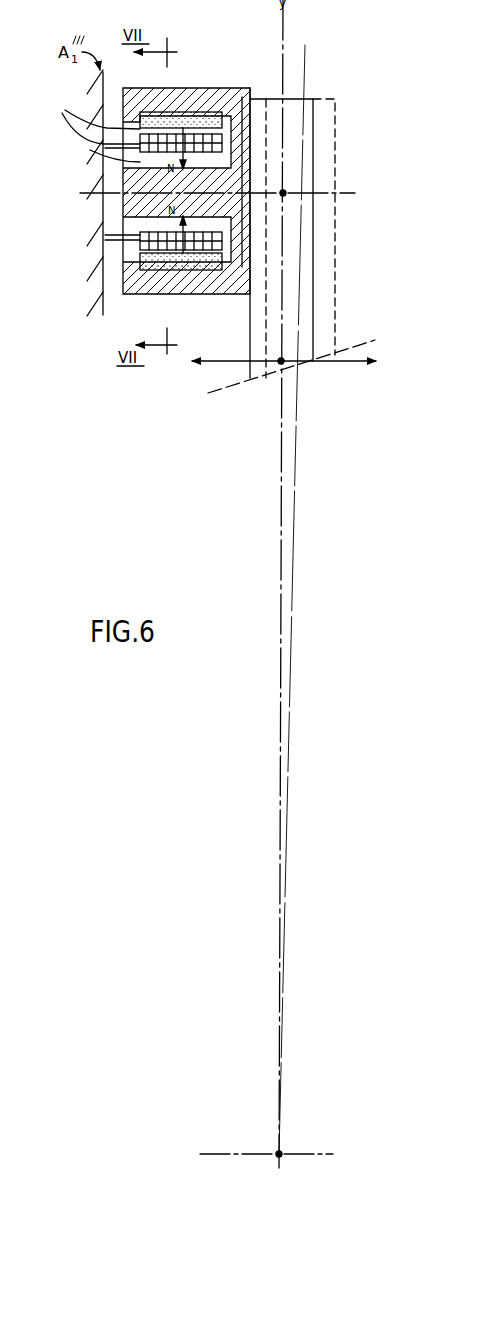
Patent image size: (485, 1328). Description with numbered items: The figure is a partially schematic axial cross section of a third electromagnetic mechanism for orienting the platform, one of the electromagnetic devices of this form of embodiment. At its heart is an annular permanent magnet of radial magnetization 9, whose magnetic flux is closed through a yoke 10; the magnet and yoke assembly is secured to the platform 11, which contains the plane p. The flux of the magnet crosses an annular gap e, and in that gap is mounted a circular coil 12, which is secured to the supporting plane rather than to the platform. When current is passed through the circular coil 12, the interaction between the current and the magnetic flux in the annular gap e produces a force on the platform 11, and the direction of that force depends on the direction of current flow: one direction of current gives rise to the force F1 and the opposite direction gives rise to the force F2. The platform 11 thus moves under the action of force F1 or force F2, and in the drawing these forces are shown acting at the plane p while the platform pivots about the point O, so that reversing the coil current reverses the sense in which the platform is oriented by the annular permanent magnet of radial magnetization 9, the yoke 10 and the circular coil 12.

The annular permanent magnet of radial magnetization 9 is at (147, 266).
The yoke 10 is at (247, 88).
The platform 11 is at (298, 312).
The circular coil 12 is at (140, 247).
The annular gap e is at (137, 129).
The plane p is at (282, 317).
The pivot point O is at (278, 1152).
The force F1 is at (338, 373).
The force F2 is at (227, 373).